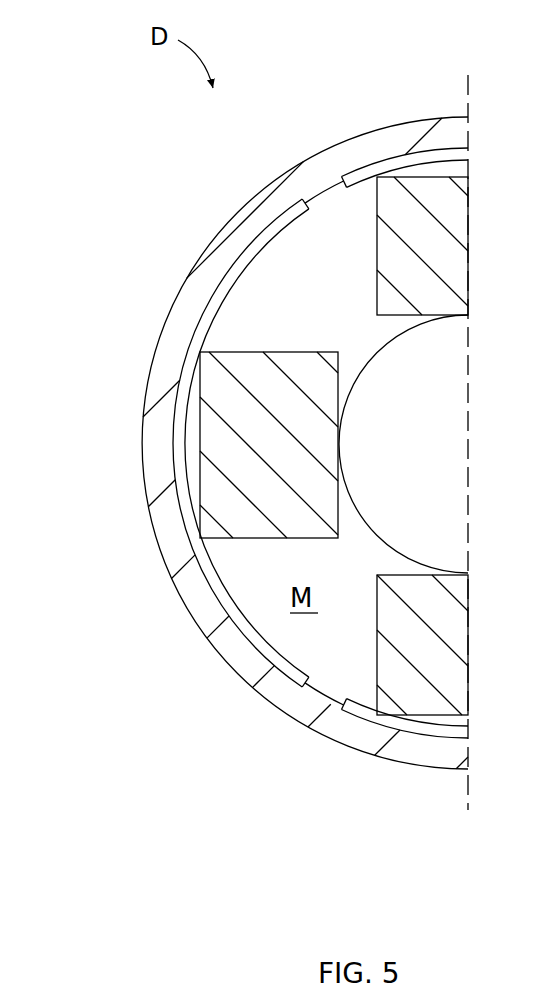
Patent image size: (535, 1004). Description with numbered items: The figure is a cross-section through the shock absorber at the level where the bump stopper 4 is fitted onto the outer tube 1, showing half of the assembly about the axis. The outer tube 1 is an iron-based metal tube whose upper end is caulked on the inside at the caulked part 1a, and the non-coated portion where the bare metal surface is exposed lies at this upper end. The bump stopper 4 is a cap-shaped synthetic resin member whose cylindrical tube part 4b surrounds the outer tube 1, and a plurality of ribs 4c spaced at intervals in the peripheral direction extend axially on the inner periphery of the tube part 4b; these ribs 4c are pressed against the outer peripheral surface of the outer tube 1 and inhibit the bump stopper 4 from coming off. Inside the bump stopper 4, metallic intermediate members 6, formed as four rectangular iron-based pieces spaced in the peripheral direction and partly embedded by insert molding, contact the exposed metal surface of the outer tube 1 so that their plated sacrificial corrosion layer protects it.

The outer tube 1 is at (286, 443).
The caulked part 1a is at (283, 287).
The bump stopper 4 is at (150, 378).
The tube part 4b is at (180, 543).
The ribs 4c is at (323, 192).
The intermediate member 6 is at (406, 210).